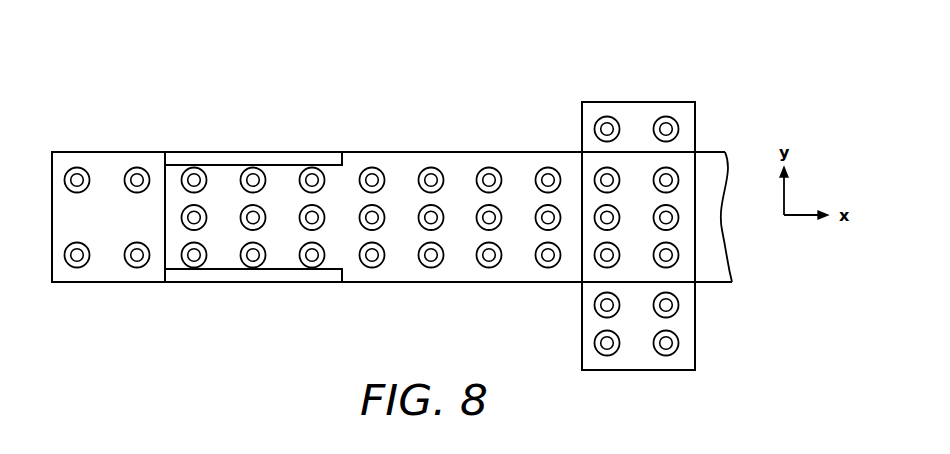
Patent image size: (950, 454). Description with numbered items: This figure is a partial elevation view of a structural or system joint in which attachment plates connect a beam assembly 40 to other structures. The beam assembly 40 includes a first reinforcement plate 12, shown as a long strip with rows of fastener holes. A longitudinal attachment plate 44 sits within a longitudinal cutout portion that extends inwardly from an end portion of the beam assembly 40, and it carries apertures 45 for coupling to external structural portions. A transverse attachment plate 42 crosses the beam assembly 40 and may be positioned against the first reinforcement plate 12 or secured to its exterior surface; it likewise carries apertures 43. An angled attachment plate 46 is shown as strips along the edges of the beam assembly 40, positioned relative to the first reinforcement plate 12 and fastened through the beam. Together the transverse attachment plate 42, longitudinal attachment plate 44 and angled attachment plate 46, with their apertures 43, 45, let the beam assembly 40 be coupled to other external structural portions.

The first reinforcement plate 12 is at (443, 152).
The beam assembly 40 is at (673, 207).
The transverse attachment plate 42 is at (680, 344).
The aperture 43 is at (607, 343).
The longitudinal attachment plate 44 is at (108, 199).
The aperture 45 is at (75, 253).
The angled attachment plate 46 is at (242, 160).